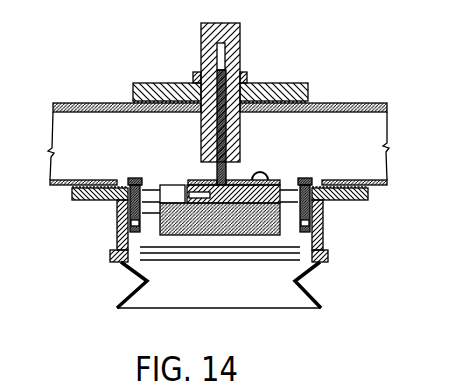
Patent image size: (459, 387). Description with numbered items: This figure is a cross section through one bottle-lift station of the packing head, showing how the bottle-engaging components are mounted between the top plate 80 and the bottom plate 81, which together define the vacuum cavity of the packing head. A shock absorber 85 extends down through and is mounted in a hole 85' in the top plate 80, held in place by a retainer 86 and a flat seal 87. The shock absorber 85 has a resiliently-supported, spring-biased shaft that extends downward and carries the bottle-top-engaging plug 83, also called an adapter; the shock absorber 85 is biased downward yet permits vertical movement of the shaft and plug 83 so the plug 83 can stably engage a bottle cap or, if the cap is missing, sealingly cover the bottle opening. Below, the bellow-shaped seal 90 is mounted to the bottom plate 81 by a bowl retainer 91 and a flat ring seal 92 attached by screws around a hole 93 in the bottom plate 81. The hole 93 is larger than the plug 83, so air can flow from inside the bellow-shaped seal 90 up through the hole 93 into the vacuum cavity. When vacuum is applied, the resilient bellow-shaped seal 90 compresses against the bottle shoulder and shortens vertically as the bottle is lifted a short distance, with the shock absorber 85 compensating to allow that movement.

The top plate 80 is at (376, 104).
The bottom plate 81 is at (386, 183).
The bottle-top-engaging plug 83 is at (159, 222).
The shock absorber 85 is at (237, 90).
The hole 85' is at (167, 127).
The retainer 86 is at (288, 83).
The flat seal 87 is at (303, 103).
The bellow-shaped seal 90 is at (116, 291).
The bowl retainer 91 is at (350, 201).
The flat ring seal 92 is at (364, 190).
The hole 93 is at (146, 172).